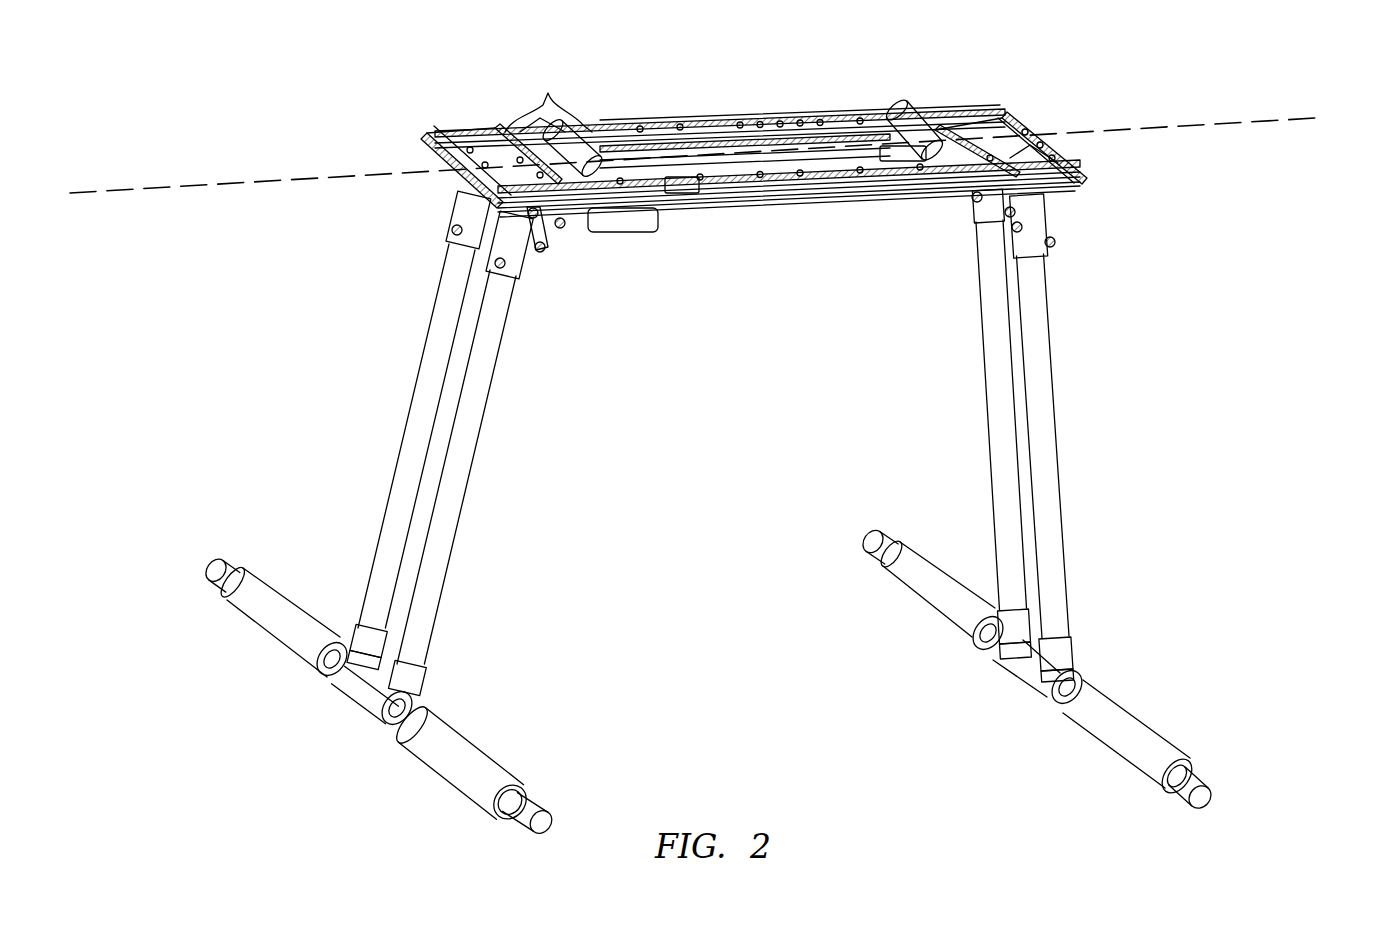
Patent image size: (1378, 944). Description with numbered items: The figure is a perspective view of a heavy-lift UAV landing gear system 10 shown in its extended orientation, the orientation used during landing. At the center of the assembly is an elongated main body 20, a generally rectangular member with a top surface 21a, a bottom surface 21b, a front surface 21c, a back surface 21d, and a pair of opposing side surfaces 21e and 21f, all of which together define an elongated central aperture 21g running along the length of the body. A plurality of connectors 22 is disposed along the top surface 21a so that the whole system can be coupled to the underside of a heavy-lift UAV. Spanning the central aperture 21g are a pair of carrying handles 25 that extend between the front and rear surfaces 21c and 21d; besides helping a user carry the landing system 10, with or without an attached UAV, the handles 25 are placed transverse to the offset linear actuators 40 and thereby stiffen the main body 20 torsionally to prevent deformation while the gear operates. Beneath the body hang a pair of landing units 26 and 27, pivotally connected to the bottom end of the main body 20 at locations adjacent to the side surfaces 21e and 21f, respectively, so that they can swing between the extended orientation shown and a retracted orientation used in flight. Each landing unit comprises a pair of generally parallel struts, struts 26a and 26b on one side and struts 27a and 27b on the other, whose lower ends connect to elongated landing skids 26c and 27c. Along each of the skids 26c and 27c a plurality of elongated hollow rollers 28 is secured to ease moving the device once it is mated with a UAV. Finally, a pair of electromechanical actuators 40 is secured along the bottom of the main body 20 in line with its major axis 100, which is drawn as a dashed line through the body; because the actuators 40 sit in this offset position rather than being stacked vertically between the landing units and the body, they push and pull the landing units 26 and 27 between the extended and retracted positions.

The heavy-lift UAV landing gear system 10 is at (295, 113).
The main body 20 is at (408, 166).
The top surface 21a is at (1020, 113).
The bottom surface 21b is at (742, 190).
The front surface 21c is at (840, 193).
The back surface 21d is at (710, 120).
The side surface 21e is at (438, 183).
The side surface 21f is at (1050, 150).
The elongated central aperture 21g is at (790, 118).
The connectors 22 is at (546, 96).
The carrying handles 25 is at (612, 126).
The landing unit 26 is at (366, 333).
The strut 26a is at (415, 397).
The strut 26b is at (488, 437).
The landing skid 26c is at (362, 722).
The landing unit 27 is at (1081, 344).
The strut 27a is at (985, 378).
The strut 27b is at (1057, 423).
The landing skid 27c is at (1025, 695).
The elongated hollow rollers 28 is at (290, 585).
The offset actuators 40 is at (616, 233).
The major axis 100 is at (719, 135).